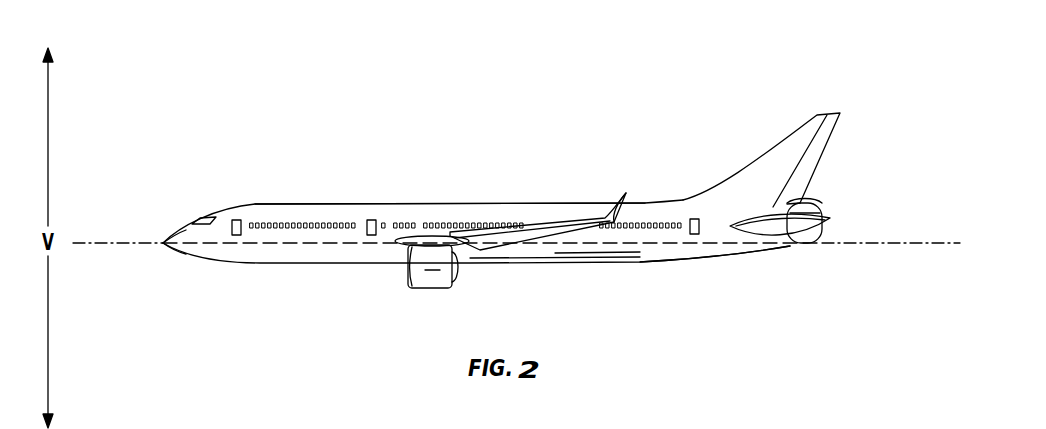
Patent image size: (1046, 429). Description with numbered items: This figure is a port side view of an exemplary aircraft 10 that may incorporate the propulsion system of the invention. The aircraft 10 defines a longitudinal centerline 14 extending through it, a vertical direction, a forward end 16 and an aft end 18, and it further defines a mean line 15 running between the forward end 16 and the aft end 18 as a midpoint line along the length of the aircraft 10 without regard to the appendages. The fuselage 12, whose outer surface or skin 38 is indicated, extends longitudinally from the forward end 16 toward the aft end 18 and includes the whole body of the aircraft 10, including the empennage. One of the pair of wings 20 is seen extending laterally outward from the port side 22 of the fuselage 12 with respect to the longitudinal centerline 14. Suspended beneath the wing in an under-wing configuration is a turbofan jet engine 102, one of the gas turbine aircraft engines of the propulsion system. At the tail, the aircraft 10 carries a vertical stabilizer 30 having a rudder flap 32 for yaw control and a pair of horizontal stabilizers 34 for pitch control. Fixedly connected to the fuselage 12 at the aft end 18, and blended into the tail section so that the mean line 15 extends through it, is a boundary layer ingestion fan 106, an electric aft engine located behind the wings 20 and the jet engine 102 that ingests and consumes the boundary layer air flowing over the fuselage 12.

The aircraft 10 is at (535, 207).
The fuselage 12 is at (262, 255).
The longitudinal centerline 14 is at (88, 250).
The mean line 15 is at (660, 238).
The forward end 16 is at (167, 252).
The aft end 18 is at (752, 256).
The wings 20 is at (560, 230).
The port side 22 is at (621, 252).
The vertical stabilizer 30 is at (787, 148).
The rudder flap 32 is at (820, 143).
The horizontal stabilizers 34 is at (790, 245).
The outer surface or skin 38 is at (413, 204).
The turbofan jet engine 102 is at (416, 285).
The boundary layer ingestion (BLI) fan 106 is at (818, 196).